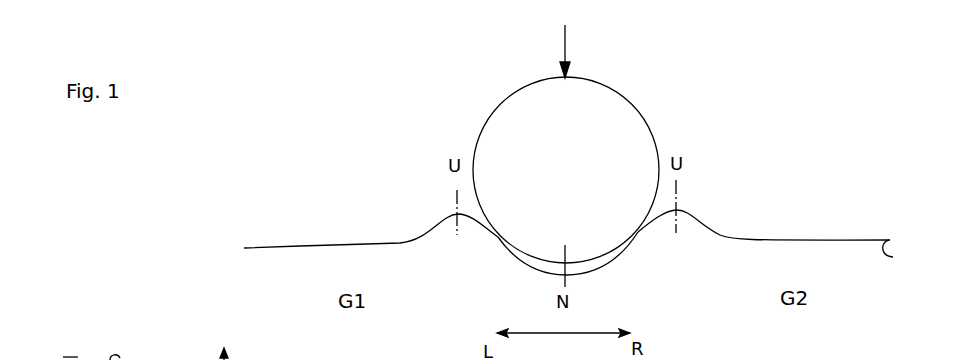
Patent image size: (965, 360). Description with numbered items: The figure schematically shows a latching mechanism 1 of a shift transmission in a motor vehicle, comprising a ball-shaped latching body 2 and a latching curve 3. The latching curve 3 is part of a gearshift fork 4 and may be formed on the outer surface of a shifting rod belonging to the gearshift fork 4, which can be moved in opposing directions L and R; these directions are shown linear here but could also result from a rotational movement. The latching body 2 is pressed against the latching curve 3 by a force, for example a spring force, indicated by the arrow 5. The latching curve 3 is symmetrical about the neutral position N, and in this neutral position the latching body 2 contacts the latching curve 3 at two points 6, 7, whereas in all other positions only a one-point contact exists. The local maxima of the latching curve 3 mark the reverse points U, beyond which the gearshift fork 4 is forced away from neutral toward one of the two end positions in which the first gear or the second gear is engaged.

The latching mechanism 1 is at (616, 170).
The latching body 2 is at (578, 177).
The latching curve 3 is at (828, 237).
The gearshift fork 4 is at (897, 256).
The arrow 5 is at (567, 45).
The contact point 6 is at (499, 238).
The contact point 7 is at (637, 234).